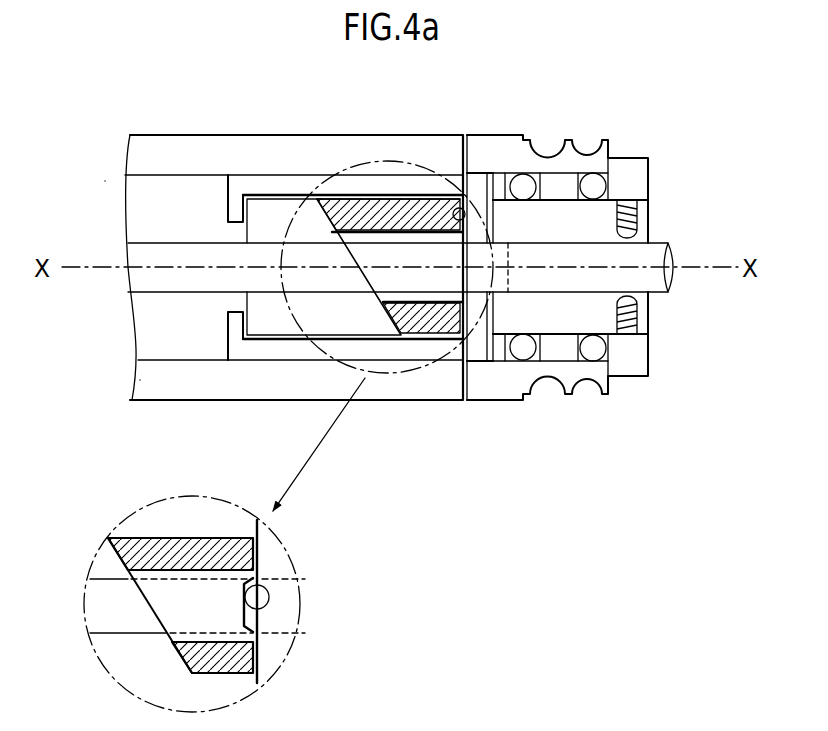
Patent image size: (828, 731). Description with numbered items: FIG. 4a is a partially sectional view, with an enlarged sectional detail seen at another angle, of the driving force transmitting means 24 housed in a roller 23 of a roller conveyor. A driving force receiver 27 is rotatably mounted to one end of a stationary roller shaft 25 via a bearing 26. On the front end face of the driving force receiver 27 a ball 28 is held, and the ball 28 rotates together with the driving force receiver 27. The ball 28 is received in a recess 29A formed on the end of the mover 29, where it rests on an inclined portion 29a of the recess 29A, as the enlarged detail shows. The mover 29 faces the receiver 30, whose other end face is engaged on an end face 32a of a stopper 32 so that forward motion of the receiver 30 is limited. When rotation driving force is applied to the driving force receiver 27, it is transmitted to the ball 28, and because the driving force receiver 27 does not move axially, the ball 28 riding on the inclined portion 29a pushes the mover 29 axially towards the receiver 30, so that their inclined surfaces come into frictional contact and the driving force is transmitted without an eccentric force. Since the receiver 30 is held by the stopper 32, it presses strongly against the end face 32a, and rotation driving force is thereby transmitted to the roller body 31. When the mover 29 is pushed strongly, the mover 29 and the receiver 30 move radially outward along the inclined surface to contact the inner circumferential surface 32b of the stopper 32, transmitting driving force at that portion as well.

The roller 23 is at (105, 181).
The driving force transmitting means 24 is at (272, 374).
The stationary roller shaft 25 is at (672, 242).
The bearing 26 is at (594, 176).
The driving force receiver 27 is at (560, 139).
The ball 28 is at (455, 208).
The mover 29 is at (386, 206).
The recess 29A is at (263, 617).
The inclined portion 29a is at (258, 631).
The receiver 30 is at (282, 206).
The roller body 31 is at (155, 122).
The stopper 32 is at (242, 196).
The end face 32a is at (228, 340).
The inner circumferential surface 32b is at (314, 208).